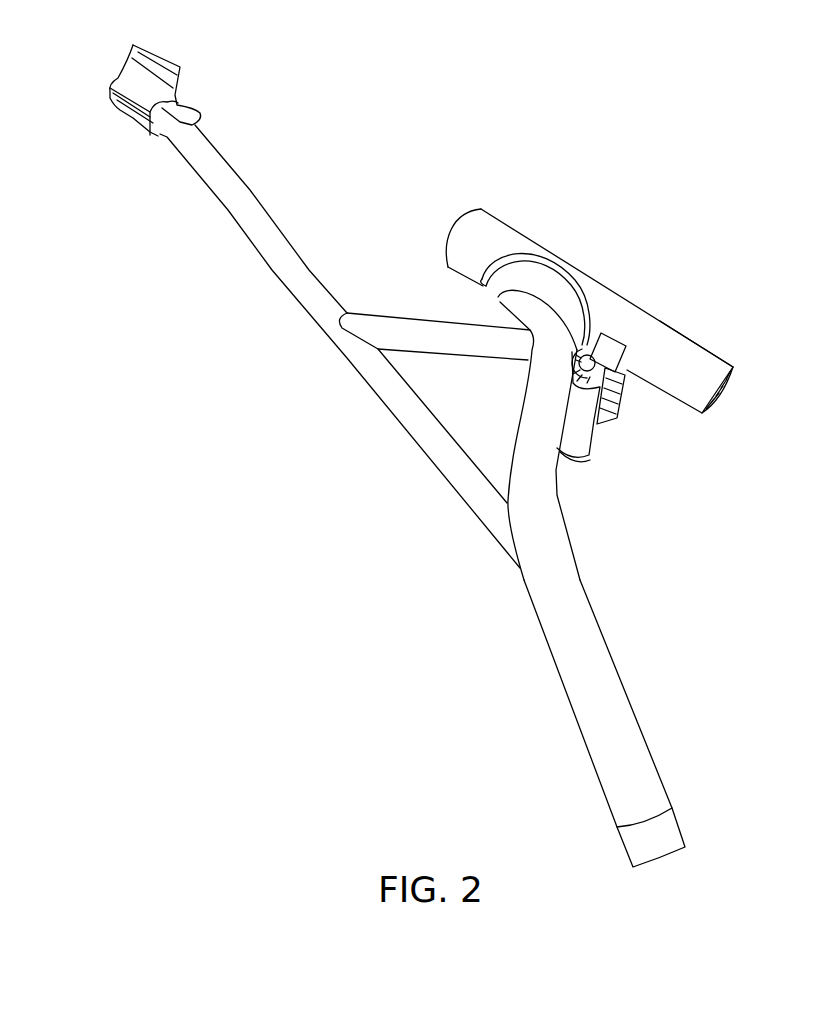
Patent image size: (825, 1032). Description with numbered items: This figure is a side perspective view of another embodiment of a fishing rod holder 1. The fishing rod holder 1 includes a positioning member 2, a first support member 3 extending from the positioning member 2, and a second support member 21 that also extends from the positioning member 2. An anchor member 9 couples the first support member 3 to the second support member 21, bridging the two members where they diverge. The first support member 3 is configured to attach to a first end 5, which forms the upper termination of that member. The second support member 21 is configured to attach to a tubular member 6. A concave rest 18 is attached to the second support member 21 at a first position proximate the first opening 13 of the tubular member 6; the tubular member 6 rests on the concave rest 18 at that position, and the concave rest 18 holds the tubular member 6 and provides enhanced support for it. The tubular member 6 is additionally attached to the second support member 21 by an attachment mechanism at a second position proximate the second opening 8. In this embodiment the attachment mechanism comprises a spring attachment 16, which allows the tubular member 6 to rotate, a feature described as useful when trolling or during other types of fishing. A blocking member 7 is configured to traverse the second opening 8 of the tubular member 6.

The fishing rod holder 1 is at (651, 80).
The positioning member 2 is at (621, 683).
The first support member 3 is at (310, 319).
The first end 5 is at (198, 133).
The tubular member 6 is at (589, 312).
The blocking member 7 is at (691, 346).
The second opening 8 is at (660, 387).
The anchor member 9 is at (430, 320).
The first opening 13 is at (461, 217).
The spring attachment 16 is at (607, 403).
The concave rest 18 is at (540, 270).
The second support member 21 is at (533, 403).